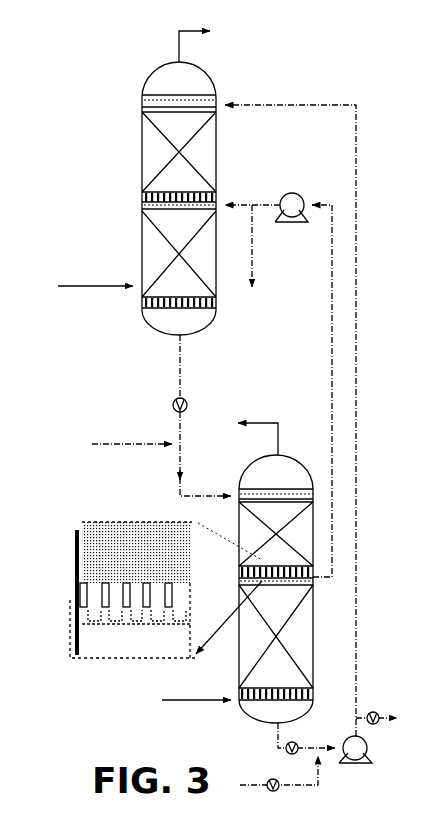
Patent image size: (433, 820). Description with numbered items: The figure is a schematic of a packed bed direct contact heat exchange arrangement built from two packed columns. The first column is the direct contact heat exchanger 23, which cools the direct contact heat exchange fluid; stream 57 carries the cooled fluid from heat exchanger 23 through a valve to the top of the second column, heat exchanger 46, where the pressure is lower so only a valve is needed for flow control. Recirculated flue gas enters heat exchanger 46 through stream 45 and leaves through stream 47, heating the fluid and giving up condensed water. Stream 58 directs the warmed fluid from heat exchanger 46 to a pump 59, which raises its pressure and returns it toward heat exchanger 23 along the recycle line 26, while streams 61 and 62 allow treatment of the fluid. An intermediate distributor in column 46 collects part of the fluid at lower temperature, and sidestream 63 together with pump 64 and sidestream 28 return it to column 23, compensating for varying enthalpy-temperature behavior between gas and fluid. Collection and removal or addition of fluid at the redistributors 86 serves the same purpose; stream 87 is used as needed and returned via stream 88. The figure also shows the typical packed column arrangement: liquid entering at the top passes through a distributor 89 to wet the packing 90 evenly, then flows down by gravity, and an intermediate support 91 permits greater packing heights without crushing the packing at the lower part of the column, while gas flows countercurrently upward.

The direct contact heat exchanger 23 is at (216, 268).
The stream 26 is at (357, 118).
The sidestream 28 is at (235, 203).
The stream 45 is at (177, 702).
The heat exchanger 46 is at (313, 652).
The stream 47 is at (276, 421).
The stream 57 is at (181, 362).
The stream 58 is at (278, 738).
The pump 59 is at (367, 745).
The stream 61 is at (318, 778).
The stream 62 is at (390, 716).
The sidestream 63 is at (332, 325).
The pump 64 is at (292, 193).
The redistributor 86 is at (142, 212).
The stream 87 is at (252, 246).
The stream 88 is at (133, 446).
The distributor 89 is at (258, 492).
The packing 90 is at (205, 150).
The intermediate support 91 is at (172, 603).